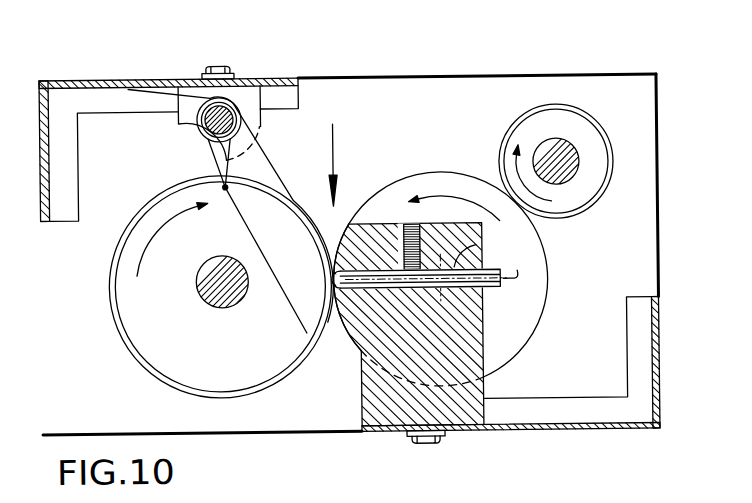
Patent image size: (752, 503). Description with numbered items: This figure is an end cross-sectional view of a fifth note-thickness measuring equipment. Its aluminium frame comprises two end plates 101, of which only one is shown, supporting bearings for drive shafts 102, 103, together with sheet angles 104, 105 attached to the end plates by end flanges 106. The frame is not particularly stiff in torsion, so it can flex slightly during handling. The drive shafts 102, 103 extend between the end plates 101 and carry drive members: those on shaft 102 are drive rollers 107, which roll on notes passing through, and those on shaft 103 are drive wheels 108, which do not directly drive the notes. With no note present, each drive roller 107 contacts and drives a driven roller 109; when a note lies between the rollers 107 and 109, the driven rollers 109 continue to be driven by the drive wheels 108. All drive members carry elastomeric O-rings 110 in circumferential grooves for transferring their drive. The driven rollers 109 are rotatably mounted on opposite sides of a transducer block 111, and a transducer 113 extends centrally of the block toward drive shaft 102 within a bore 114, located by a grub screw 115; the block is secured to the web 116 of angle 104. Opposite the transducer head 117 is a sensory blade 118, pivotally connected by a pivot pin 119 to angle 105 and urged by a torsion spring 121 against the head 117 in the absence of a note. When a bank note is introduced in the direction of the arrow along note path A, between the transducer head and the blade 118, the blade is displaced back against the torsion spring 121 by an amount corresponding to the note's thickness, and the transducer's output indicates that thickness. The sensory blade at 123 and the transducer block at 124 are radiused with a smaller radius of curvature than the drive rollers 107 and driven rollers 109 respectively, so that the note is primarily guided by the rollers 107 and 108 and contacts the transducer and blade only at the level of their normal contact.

The end plate 101 is at (431, 104).
The drive shaft 102 is at (217, 306).
The drive shaft 103 is at (571, 142).
The sheet angle 104 is at (575, 447).
The sheet angle 105 is at (76, 68).
The end flange 106 is at (144, 101).
The drive roller 107 is at (246, 377).
The drive wheel 108 is at (555, 110).
The driven roller 109 is at (459, 174).
The elastomeric O-ring 110 is at (144, 358).
The transducer block 111 is at (358, 397).
The transducer 113 is at (484, 291).
The bore 114 is at (482, 250).
The grub screw 115 is at (404, 246).
The web 116 is at (516, 429).
The transducer head 117 is at (336, 305).
The sensory blade 118 is at (296, 302).
The pivot pin 119 is at (207, 126).
The torsion spring 121 is at (256, 153).
The radiused portion of sensory blade 123 is at (327, 258).
The radiused portion of transducer block 124 is at (351, 222).
The note path A is at (335, 128).